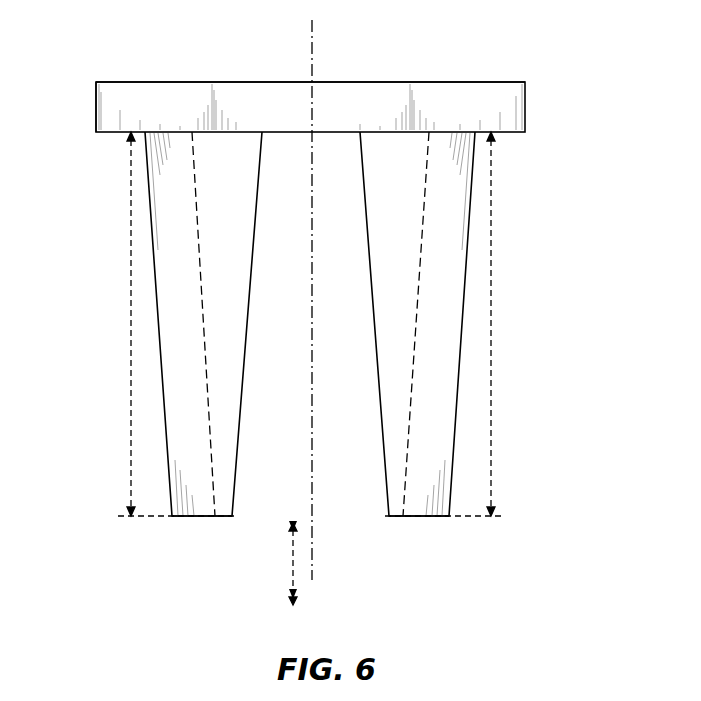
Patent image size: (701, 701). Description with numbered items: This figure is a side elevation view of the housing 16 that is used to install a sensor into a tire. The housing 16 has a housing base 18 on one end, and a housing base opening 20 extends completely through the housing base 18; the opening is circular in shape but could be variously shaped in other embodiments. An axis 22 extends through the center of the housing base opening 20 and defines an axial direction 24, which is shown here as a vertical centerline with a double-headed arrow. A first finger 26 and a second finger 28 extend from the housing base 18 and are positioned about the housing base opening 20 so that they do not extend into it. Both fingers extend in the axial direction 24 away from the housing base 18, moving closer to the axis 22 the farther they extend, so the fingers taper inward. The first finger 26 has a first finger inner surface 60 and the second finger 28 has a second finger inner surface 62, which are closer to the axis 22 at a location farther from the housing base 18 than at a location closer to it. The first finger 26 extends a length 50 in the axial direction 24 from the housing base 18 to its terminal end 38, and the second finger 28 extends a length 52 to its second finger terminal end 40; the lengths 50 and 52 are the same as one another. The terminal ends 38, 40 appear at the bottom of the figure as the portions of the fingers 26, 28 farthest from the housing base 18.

The housing 16 is at (560, 99).
The housing base 18 is at (100, 108).
The housing base opening 20 is at (397, 82).
The axis 22 is at (313, 50).
The axial direction 24 is at (292, 562).
The first finger 26 is at (157, 292).
The second finger 28 is at (465, 292).
The terminal end 38 is at (200, 516).
The second finger terminal end 40 is at (418, 516).
The length 50 is at (131, 322).
The length 52 is at (491, 322).
The first finger inner surface 60 is at (208, 343).
The second finger inner surface 62 is at (411, 343).